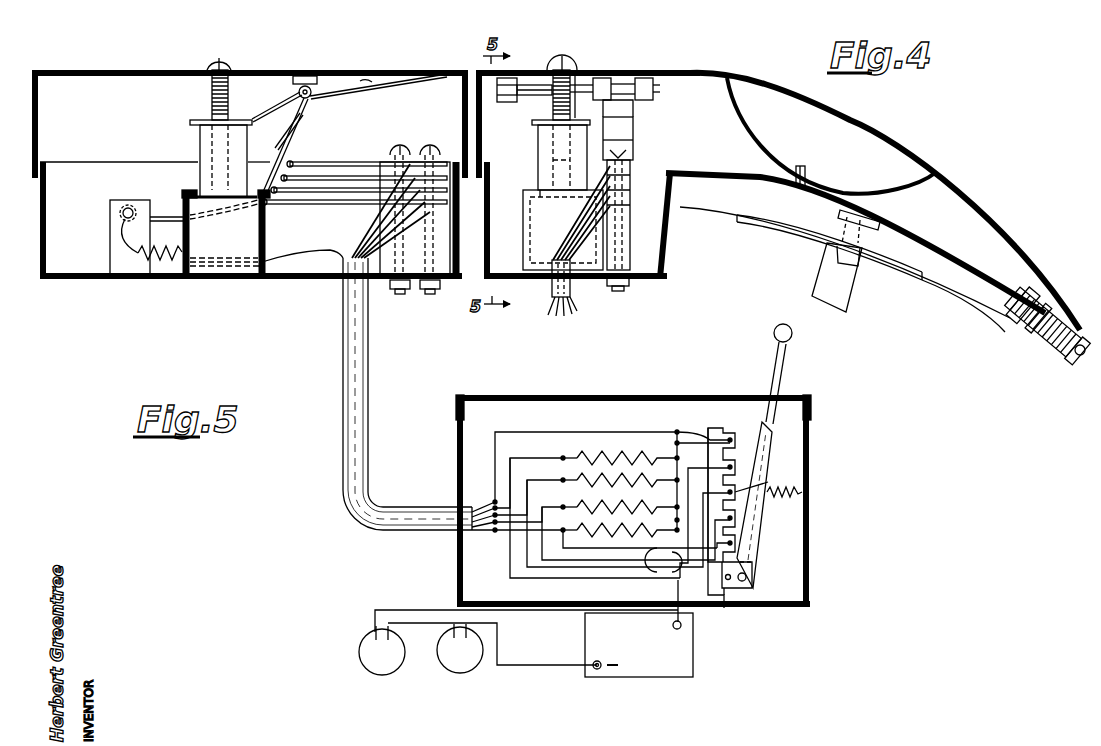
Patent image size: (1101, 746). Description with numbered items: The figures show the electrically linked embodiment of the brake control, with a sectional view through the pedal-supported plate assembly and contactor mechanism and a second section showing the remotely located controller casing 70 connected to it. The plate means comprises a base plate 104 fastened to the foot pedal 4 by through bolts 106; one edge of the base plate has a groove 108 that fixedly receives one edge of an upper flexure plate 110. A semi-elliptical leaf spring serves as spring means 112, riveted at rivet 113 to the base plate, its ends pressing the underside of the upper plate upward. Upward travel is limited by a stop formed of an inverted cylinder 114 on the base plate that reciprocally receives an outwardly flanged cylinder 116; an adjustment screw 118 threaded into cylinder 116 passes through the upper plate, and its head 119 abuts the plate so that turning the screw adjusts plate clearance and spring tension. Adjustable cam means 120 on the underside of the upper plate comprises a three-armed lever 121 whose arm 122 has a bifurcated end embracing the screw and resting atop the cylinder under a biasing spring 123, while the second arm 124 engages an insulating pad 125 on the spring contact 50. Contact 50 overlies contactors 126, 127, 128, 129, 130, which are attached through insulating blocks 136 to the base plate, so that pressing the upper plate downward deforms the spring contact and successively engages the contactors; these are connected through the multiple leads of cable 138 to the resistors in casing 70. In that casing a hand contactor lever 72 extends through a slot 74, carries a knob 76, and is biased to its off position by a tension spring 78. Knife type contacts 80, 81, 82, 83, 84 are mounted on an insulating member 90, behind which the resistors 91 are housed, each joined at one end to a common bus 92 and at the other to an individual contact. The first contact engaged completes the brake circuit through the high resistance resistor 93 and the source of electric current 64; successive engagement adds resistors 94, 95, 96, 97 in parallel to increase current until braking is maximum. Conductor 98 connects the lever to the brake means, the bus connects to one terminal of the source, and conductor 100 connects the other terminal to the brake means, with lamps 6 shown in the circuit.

In FIG. 4, the foot pedal 4 is at (843, 290).
In FIG. 5, the signal lamps 6 is at (422, 660).
In FIG. 5, the spring contact 50 is at (290, 135).
In FIG. 4, the spring contact 50 is at (636, 140).
In FIG. 5, the source of electric current 64 is at (625, 667).
In FIG. 5, the casing 70 is at (810, 553).
In FIG. 5, the hand contactor lever 72 is at (762, 452).
In FIG. 5, the slot 74 is at (715, 398).
In FIG. 5, the knob 76 is at (792, 336).
In FIG. 5, the tension spring 78 is at (800, 498).
In FIG. 5, the knife type contact 80 is at (742, 551).
In FIG. 5, the knife type contact 81 is at (740, 525).
In FIG. 5, the knife type contact 82 is at (760, 486).
In FIG. 5, the knife type contact 83 is at (722, 466).
In FIG. 5, the knife type contact 84 is at (735, 433).
In FIG. 5, the insulating member 90 is at (716, 432).
In FIG. 5, the resistors 91 is at (556, 428).
In FIG. 5, the common bus 92 is at (665, 580).
In FIG. 5, the high resistance resistor 93 is at (583, 530).
In FIG. 5, the resistor 94 is at (644, 508).
In FIG. 5, the resistor 95 is at (583, 481).
In FIG. 5, the resistor 96 is at (583, 456).
In FIG. 5, the resistor 97 is at (614, 432).
In FIG. 5, the conductor 98 is at (425, 610).
In FIG. 5, the conductor 100 is at (537, 667).
In FIG. 5, the base plate 104 is at (96, 176).
In FIG. 4, the base plate 104 is at (980, 280).
In FIG. 4, the through bolts 106 is at (872, 236).
In FIG. 4, the groove 108 is at (1074, 352).
In FIG. 5, the upper flexure plate 110 is at (368, 72).
In FIG. 4, the upper flexure plate 110 is at (990, 215).
In FIG. 4, the spring means 112 is at (856, 188).
In FIG. 4, the rivet 113 is at (805, 182).
In FIG. 5, the inverted cylinder 114 is at (192, 272).
In FIG. 4, the inverted cylinder 114 is at (562, 231).
In FIG. 5, the outwardly flanged cylinder 116 is at (200, 148).
In FIG. 4, the outwardly flanged cylinder 116 is at (538, 178).
In FIG. 4, the adjustment screw 118 is at (550, 105).
In FIG. 5, the head 119 is at (222, 64).
In FIG. 4, the head 119 is at (570, 70).
In FIG. 5, the adjustable cam means 120 is at (305, 76).
In FIG. 4, the adjustable cam means 120 is at (605, 76).
In FIG. 5, the three-armed lever 121 is at (299, 92).
In FIG. 4, the three-armed lever 121 is at (530, 85).
In FIG. 5, the arm 122 is at (270, 108).
In FIG. 4, the arm 122 is at (575, 90).
In FIG. 5, the biasing spring 123 is at (402, 82).
In FIG. 5, the second arm 124 is at (292, 134).
In FIG. 4, the second arm 124 is at (640, 108).
In FIG. 5, the insulating pad 125 is at (284, 151).
In FIG. 5, the contactor 126 is at (325, 200).
In FIG. 5, the contactor 127 is at (300, 200).
In FIG. 5, the contactor 128 is at (314, 170).
In FIG. 5, the contactor 129 is at (330, 175).
In FIG. 5, the contactor 130 is at (358, 186).
In FIG. 5, the insulating blocks 136 is at (436, 168).
In FIG. 4, the insulating blocks 136 is at (640, 246).
In FIG. 5, the cable 138 is at (357, 338).
In FIG. 4, the cable 138 is at (570, 300).